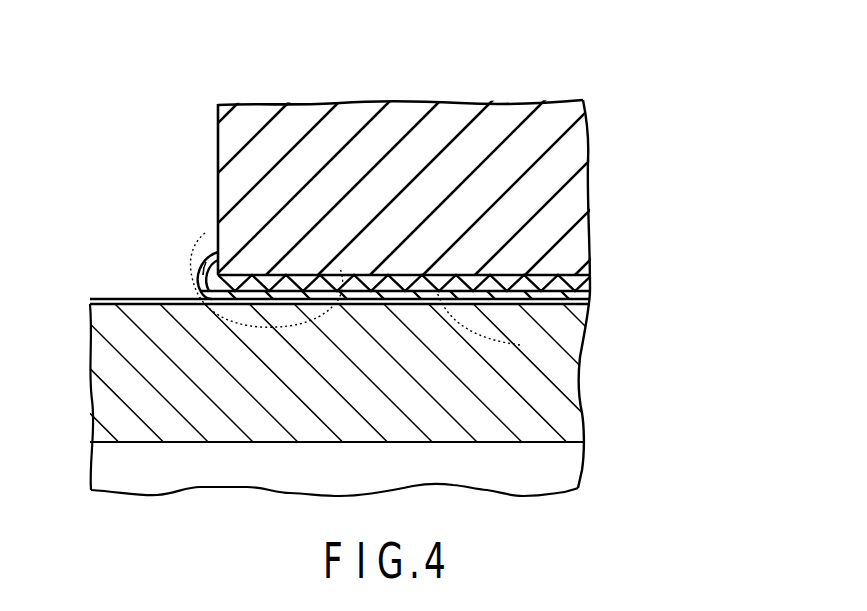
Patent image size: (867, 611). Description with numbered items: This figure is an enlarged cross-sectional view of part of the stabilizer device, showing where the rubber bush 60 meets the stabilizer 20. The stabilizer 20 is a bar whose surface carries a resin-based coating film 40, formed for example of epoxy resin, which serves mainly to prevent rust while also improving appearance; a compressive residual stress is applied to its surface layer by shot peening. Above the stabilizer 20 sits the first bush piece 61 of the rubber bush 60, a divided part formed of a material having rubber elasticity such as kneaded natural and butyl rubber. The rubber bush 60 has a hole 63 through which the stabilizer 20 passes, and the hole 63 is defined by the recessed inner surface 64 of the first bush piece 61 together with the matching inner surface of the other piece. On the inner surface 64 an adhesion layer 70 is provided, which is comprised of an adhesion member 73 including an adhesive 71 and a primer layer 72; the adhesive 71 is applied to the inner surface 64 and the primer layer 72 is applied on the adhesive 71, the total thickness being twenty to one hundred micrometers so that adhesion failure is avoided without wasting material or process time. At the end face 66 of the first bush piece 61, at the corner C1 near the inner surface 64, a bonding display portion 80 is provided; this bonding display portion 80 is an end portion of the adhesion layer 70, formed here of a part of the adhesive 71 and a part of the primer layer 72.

The stabilizer 20 is at (93, 400).
The coating film 40 is at (130, 300).
The rubber bush 60 is at (409, 261).
The first bush piece 61 is at (588, 127).
The hole 63 is at (260, 327).
The inner surface 64 is at (520, 345).
The end face 66 is at (217, 135).
The adhesion layer 70 is at (442, 241).
The adhesive 71 is at (592, 282).
The primer layer 72 is at (592, 298).
The adhesion member 73 is at (466, 242).
The bonding display portion 80 is at (203, 271).
The corner C1 is at (206, 262).